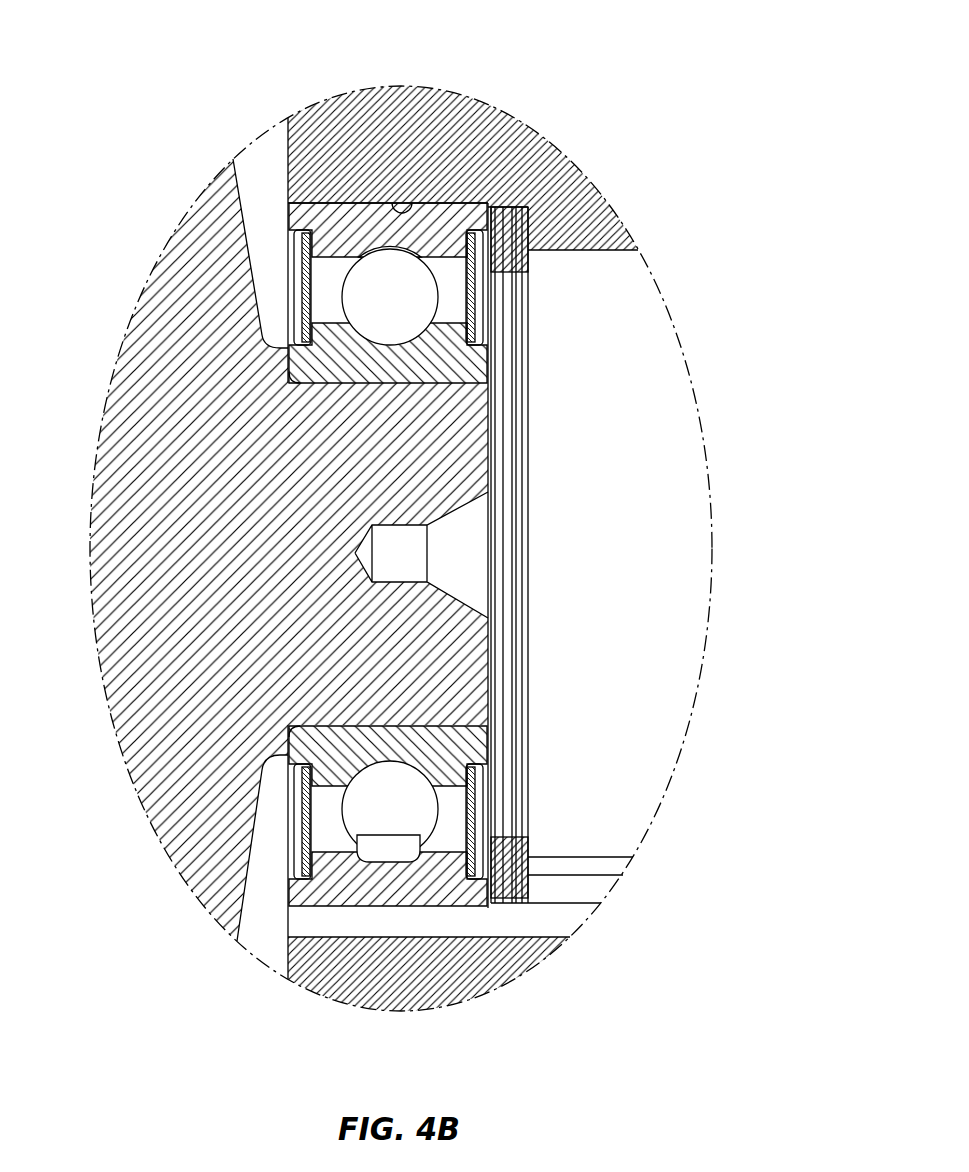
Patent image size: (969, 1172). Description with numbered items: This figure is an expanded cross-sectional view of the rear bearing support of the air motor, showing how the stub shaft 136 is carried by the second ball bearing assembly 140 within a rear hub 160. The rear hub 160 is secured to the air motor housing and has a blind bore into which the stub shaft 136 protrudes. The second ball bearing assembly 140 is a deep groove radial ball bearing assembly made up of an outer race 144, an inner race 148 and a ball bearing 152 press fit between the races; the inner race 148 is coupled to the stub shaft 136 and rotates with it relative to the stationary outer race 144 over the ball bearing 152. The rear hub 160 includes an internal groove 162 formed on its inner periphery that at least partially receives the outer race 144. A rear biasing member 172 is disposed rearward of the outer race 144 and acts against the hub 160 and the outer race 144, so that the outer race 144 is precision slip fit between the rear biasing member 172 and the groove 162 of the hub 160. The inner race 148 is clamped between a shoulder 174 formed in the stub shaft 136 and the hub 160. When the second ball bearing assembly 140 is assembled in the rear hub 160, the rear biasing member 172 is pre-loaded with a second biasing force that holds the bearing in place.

The stub shaft 136 is at (460, 444).
The second ball bearing assembly 140 is at (483, 178).
The outer race 144 is at (333, 228).
The inner race 148 is at (292, 737).
The ball bearing 152 is at (386, 300).
The rear hub 160 is at (573, 213).
The internal groove 162 is at (466, 210).
The rear biasing member 172 is at (528, 292).
The shoulder 174 is at (295, 365).